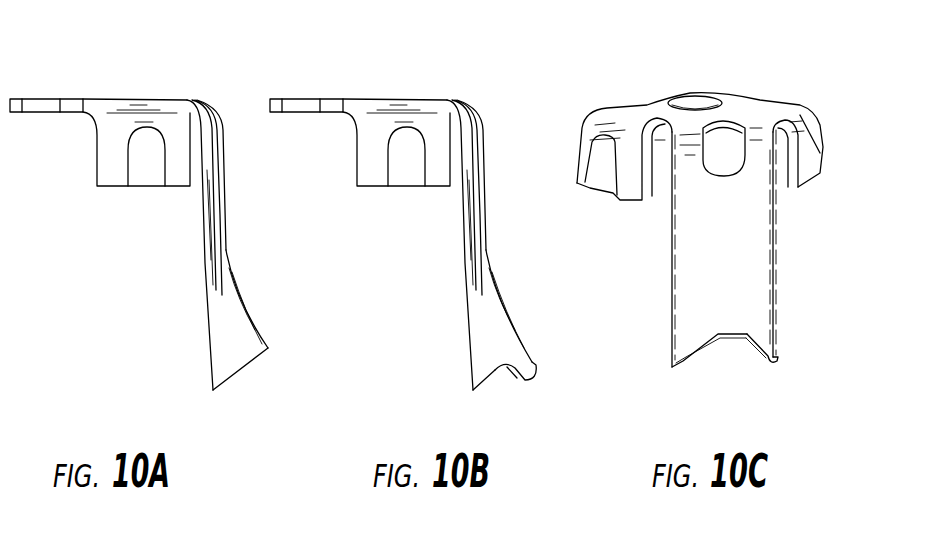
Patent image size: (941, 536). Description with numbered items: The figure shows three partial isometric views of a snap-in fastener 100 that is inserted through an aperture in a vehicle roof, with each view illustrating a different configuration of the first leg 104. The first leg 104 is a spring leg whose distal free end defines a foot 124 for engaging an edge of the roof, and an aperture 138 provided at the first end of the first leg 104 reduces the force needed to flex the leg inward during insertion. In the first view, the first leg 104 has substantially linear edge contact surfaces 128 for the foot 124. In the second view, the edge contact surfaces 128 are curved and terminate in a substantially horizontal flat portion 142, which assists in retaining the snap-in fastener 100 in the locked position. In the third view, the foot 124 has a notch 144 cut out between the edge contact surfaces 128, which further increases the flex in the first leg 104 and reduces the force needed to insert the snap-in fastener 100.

In FIG. 10A, the snap-in fastener 100 is at (94, 77).
In FIG. 10B, the snap-in fastener 100 is at (351, 77).
In FIG. 10C, the snap-in fastener 100 is at (631, 74).
In FIG. 10A, the first leg 104 is at (222, 240).
In FIG. 10B, the first leg 104 is at (477, 240).
In FIG. 10C, the first leg 104 is at (757, 260).
In FIG. 10A, the foot 124 is at (258, 333).
In FIG. 10B, the foot 124 is at (510, 337).
In FIG. 10C, the foot 124 is at (768, 347).
In FIG. 10A, the edge contact surfaces 128 is at (235, 373).
In FIG. 10B, the edge contact surfaces 128 is at (490, 377).
In FIG. 10C, the aperture 138 is at (725, 137).
In FIG. 10B, the flat portion 142 is at (525, 375).
In FIG. 10C, the notch 144 is at (727, 366).